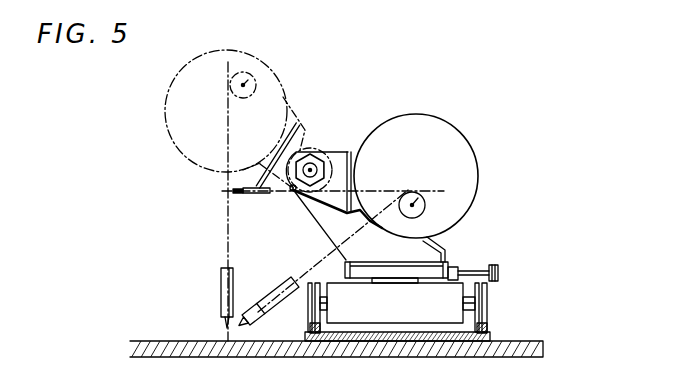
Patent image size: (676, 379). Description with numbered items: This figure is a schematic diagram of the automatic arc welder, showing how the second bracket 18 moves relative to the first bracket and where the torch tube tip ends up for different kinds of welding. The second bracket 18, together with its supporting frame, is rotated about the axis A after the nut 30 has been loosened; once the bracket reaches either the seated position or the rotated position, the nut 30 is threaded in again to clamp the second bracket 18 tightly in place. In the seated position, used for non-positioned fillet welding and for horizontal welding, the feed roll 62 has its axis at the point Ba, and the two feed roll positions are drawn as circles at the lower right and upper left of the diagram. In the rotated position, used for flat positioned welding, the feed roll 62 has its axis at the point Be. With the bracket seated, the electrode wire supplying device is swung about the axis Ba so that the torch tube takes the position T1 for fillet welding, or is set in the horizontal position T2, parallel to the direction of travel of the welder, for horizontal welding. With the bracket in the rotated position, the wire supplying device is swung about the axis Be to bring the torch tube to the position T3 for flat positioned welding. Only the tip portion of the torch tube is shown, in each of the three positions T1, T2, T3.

The axis point Be is at (245, 84).
The feed roll 62 is at (250, 97).
The second bracket 18 is at (305, 130).
The nut 30 is at (311, 169).
The axis A is at (311, 170).
The axis point Ba is at (413, 204).
The torch tube position T1 is at (270, 297).
The torch tube position T2 is at (237, 192).
The torch tube position T3 is at (221, 300).